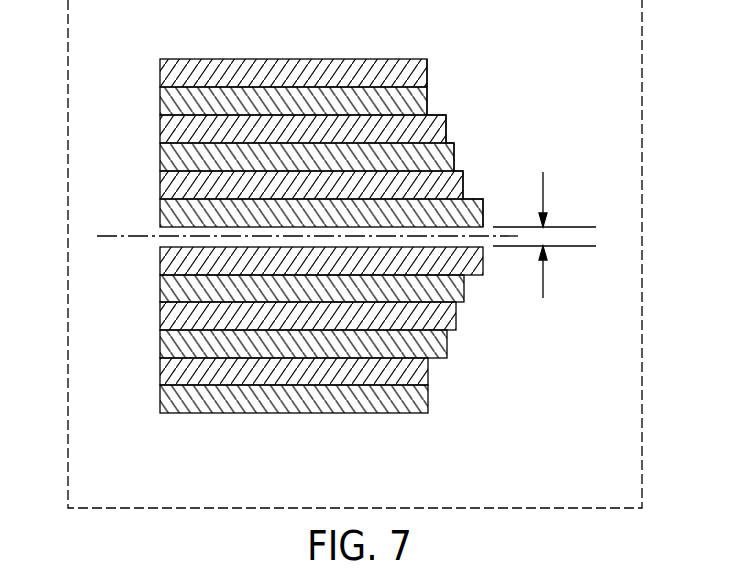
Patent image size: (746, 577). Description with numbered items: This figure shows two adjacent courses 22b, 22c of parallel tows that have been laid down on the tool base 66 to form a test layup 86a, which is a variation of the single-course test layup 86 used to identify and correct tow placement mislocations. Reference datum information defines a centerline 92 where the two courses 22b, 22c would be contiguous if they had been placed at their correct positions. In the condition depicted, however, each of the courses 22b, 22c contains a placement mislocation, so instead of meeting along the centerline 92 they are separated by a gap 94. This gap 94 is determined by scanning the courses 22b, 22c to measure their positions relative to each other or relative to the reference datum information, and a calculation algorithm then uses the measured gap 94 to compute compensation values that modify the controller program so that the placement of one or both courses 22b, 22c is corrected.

The course 22b is at (150, 50).
The course 22c is at (281, 351).
The test layup 86 is at (293, 399).
The test layup 86a is at (485, 97).
The centerline 92 is at (113, 235).
The gap 94 is at (543, 277).
The tool base 66 is at (553, 508).